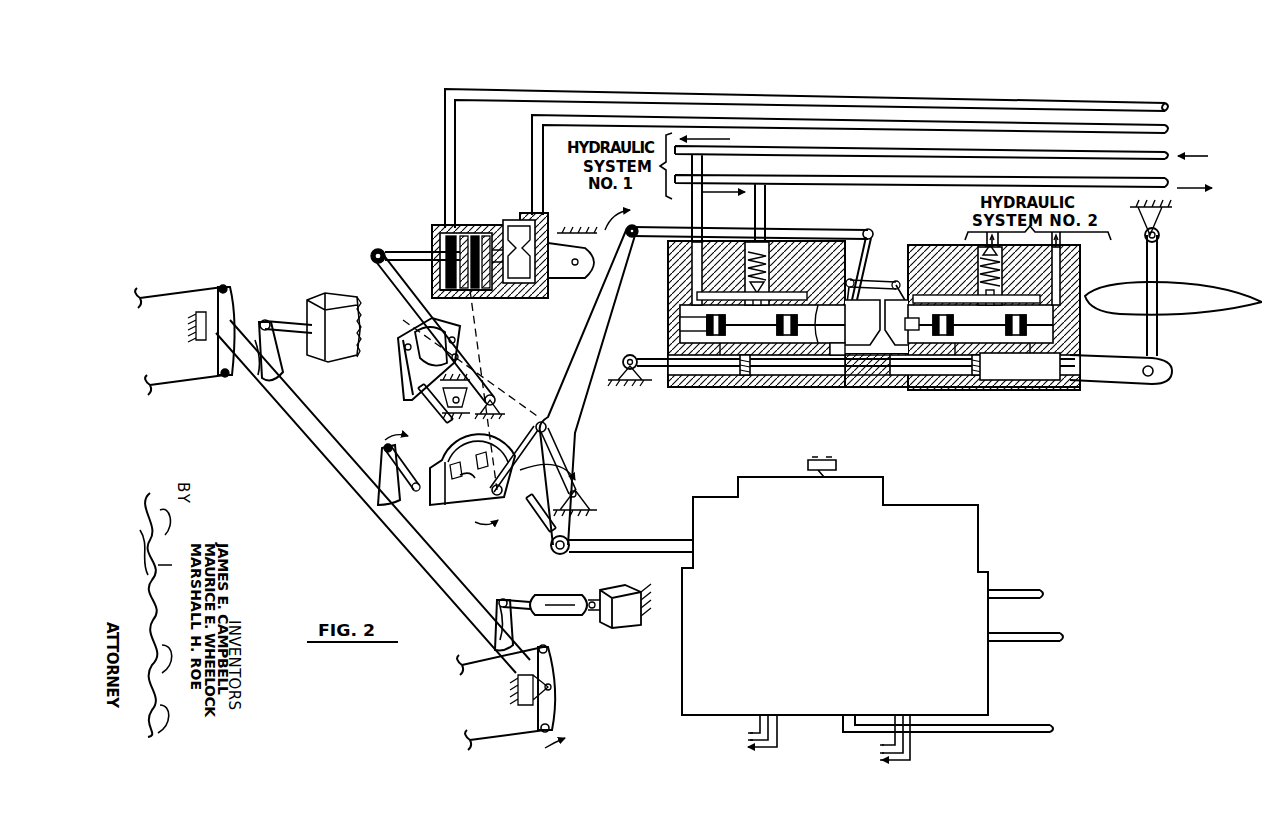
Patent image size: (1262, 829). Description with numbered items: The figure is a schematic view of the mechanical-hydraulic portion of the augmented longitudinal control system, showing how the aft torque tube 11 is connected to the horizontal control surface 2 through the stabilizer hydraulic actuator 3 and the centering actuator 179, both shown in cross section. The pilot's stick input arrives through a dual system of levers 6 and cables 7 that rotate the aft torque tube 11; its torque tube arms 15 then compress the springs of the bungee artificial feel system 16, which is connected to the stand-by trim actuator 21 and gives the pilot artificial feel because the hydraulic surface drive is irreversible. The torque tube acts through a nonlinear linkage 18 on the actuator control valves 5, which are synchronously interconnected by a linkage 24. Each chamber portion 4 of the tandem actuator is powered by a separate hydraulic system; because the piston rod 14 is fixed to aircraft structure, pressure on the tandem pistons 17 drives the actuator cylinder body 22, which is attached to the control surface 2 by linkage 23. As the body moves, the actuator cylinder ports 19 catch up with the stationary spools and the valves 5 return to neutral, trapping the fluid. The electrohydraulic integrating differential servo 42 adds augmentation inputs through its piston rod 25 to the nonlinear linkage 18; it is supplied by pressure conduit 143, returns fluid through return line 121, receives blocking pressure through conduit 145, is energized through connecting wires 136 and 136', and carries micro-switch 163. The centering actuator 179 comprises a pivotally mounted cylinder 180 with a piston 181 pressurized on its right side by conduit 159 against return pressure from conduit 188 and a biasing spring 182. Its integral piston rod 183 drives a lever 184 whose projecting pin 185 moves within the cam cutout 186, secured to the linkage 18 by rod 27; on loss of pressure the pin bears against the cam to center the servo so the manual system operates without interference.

The control surface 2 is at (1185, 295).
The hydraulic actuator 3 is at (885, 400).
The chamber portion 4 is at (836, 384).
The actuator control valves 5 is at (675, 327).
The levers 6 is at (233, 310).
The cables 7 is at (185, 383).
The aft torque tube 11 is at (325, 438).
The piston rod 14 is at (657, 368).
The torque tube arms 15 is at (268, 355).
The bungee artificial feel system 16 is at (565, 612).
The actuator pistons 17 is at (745, 378).
The nonlinear linkage 18 is at (457, 502).
The actuator cylinder ports 19 is at (682, 300).
The stand-by trim actuator 21 is at (632, 616).
The actuator cylinder body 22 is at (866, 394).
The linkage 23 is at (1165, 340).
The linkage 24 is at (875, 245).
The piston rod 25 is at (630, 546).
The rod 27 is at (420, 400).
The electrohydraulic integrating differential servo 42 is at (935, 495).
The return line 121 is at (1035, 156).
The connecting wires 136 is at (876, 741).
The electrical leads 136' is at (739, 734).
The conduit 143 is at (1050, 188).
The conduit 145 is at (1025, 729).
The conduit 159 is at (1010, 128).
The micro-switch 163 is at (810, 463).
The centering actuator 179 is at (410, 212).
The cylinder 180 is at (505, 298).
The piston 181 is at (488, 238).
The biasing spring 182 is at (455, 238).
The piston rod 183 is at (410, 252).
The lever 184 is at (372, 268).
The projecting pin 185 is at (455, 346).
The cam cutout 186 is at (416, 330).
The conduit 188 is at (865, 100).